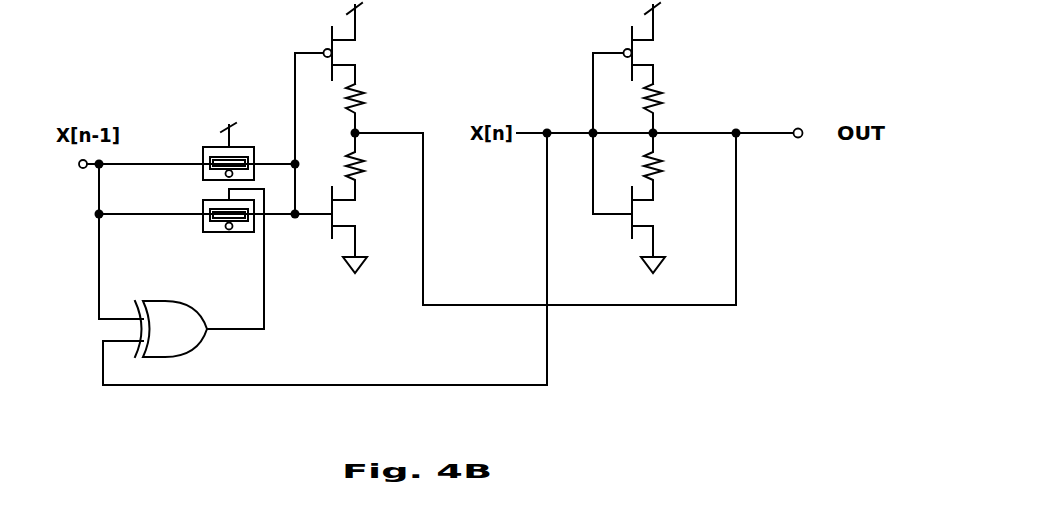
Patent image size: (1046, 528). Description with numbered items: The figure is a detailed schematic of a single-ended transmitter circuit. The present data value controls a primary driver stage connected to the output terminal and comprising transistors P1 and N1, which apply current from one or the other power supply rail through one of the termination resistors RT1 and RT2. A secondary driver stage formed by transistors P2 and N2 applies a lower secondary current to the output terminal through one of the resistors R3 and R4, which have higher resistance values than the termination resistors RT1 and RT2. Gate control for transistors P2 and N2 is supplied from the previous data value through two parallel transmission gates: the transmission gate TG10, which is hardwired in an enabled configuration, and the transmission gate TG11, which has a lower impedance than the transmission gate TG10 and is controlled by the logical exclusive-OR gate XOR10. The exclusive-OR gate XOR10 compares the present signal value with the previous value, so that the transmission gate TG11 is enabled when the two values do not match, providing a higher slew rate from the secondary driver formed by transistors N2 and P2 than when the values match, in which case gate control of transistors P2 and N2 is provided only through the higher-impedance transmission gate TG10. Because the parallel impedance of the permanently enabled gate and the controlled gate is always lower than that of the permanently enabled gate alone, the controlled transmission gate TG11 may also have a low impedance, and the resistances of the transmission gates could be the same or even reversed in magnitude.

The transmission gate TG10 is at (227, 139).
The transmission gate TG11 is at (195, 259).
The exclusive-OR gate XOR10 is at (205, 333).
The transistor P2 is at (356, 43).
The resistor R3 is at (368, 108).
The resistor R4 is at (368, 166).
The transistor N2 is at (361, 230).
The transistor P1 is at (656, 43).
The termination resistor RT1 is at (670, 108).
The termination resistor RT2 is at (670, 166).
The transistor N1 is at (661, 230).